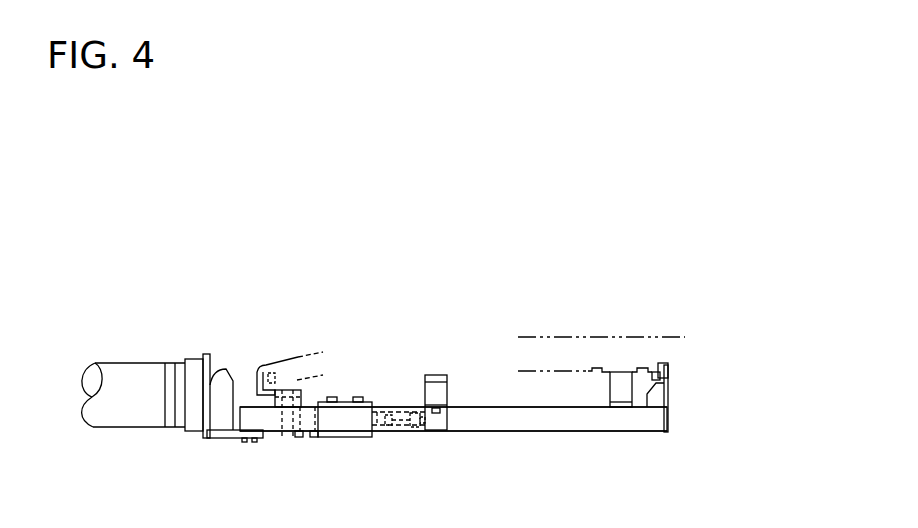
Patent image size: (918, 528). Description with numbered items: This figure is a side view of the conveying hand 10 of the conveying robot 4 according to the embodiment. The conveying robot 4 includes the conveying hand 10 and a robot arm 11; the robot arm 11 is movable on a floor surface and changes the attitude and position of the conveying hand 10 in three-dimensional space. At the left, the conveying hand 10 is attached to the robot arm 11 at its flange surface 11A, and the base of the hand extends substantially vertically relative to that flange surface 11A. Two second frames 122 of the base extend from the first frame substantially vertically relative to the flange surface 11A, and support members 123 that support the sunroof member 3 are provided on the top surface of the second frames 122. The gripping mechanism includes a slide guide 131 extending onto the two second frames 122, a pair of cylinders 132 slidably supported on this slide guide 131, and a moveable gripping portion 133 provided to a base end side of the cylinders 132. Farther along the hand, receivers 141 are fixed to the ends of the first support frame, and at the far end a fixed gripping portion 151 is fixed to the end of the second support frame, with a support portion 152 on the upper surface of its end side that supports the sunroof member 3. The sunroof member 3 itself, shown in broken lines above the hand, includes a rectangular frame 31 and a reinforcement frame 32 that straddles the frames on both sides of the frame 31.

The conveying robot 4 is at (248, 238).
The conveying hand 10 is at (423, 304).
The robot arm 11 is at (198, 346).
The flange surface 11A is at (227, 368).
The moveable gripping portion 133 is at (271, 364).
The frame 31 is at (297, 357).
The sunroof member 3 is at (583, 328).
The reinforcement frame 32 is at (630, 337).
The receiver 141 is at (440, 390).
The fixed gripping portion 151 is at (670, 372).
The support portion 152 is at (620, 396).
The second frame 122 is at (272, 420).
The support member 123 is at (287, 410).
The cylinder 132 is at (338, 422).
The slide guide 131 is at (345, 420).